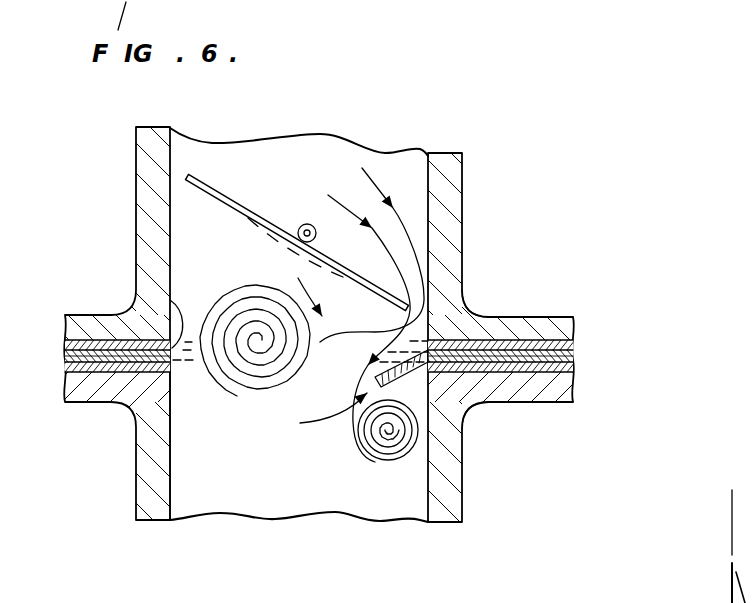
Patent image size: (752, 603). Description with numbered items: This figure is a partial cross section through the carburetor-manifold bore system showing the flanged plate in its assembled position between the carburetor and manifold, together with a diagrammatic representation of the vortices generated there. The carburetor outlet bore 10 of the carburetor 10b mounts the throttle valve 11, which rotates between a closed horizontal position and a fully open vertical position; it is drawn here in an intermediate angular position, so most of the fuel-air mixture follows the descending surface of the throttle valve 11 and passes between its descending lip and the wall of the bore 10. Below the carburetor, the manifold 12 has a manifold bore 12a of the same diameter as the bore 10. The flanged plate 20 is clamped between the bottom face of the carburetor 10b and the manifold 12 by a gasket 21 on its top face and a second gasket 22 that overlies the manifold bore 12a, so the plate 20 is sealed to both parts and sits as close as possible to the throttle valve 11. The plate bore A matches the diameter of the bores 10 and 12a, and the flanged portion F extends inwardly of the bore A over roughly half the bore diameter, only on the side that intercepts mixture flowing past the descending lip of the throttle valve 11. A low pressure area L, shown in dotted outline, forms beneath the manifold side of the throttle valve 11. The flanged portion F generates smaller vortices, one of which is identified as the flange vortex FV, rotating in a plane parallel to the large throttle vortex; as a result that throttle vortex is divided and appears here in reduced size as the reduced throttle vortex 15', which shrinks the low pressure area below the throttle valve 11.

The carburetor outlet bore 10 is at (428, 180).
The carburetor 10b is at (547, 317).
The throttle valve 11 is at (215, 190).
The manifold 12 is at (516, 393).
The manifold bore 12a is at (172, 481).
The reduced throttle vortex 15' is at (255, 380).
The flanged plate 20 is at (566, 358).
The gasket 21 is at (550, 343).
The second gasket 22 is at (553, 372).
The plate bore A is at (170, 302).
The low pressure area L is at (280, 244).
The flanged portion F is at (328, 418).
The flange vortex FV is at (378, 462).